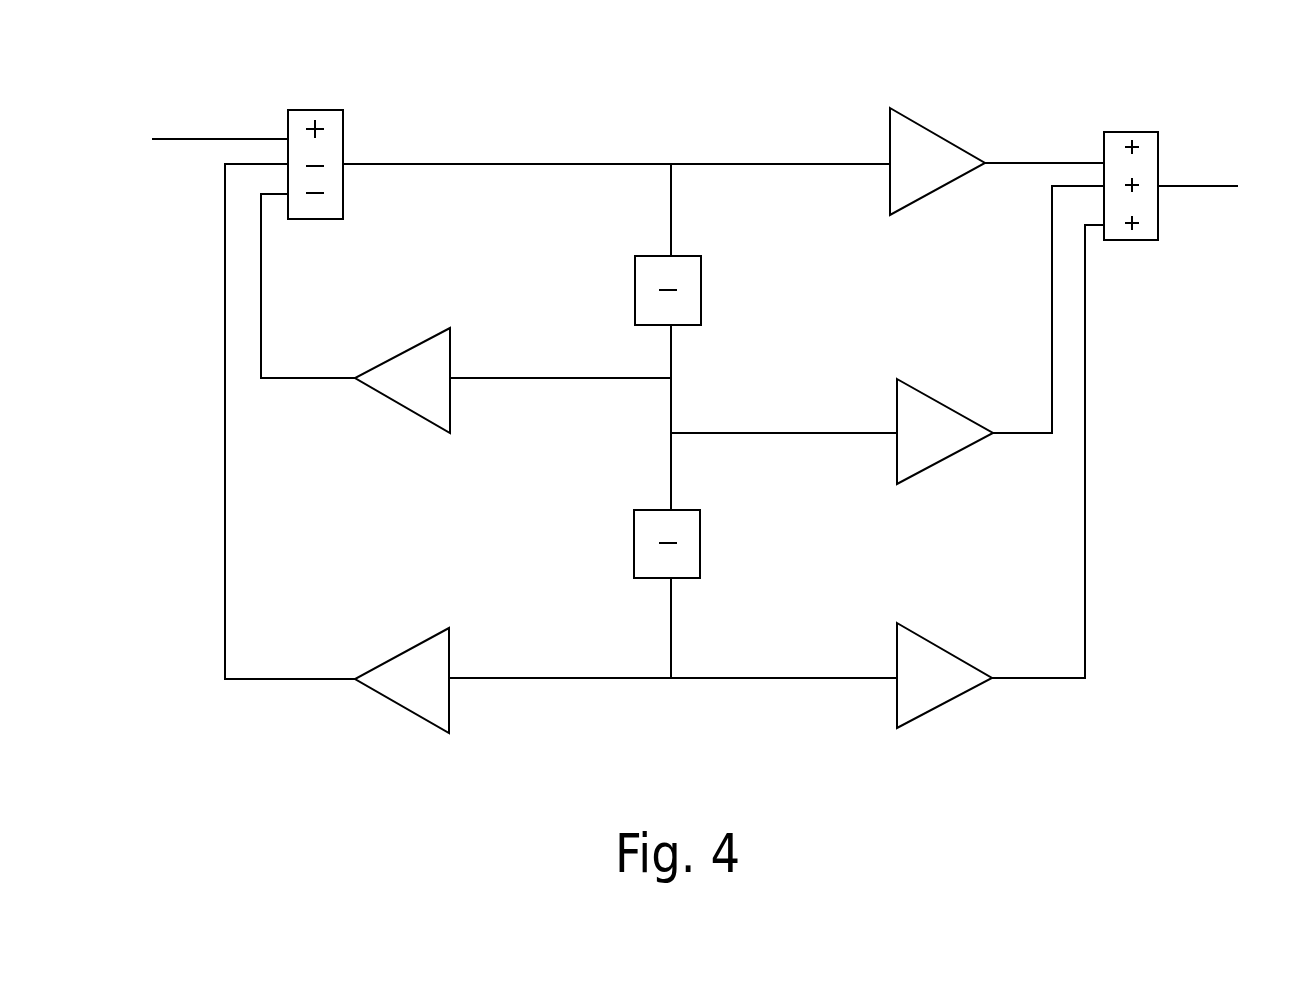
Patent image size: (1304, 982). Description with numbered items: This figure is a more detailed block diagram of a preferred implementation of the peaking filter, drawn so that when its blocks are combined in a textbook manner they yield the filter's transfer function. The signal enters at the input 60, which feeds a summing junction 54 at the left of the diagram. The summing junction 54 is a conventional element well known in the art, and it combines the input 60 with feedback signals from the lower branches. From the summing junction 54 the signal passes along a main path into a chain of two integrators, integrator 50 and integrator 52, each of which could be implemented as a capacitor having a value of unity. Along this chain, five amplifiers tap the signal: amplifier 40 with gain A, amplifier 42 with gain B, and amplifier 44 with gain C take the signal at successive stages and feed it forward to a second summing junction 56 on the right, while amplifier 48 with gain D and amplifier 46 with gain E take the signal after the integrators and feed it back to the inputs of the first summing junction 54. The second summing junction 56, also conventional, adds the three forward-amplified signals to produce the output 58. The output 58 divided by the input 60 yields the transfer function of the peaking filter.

The amplifier 40 is at (920, 120).
The amplifier 42 is at (925, 392).
The amplifier 44 is at (933, 643).
The amplifier 46 is at (423, 640).
The amplifier 48 is at (430, 337).
The integrator 50 is at (701, 283).
The integrator 52 is at (700, 535).
The summing junction 54 is at (335, 110).
The summing junction 56 is at (1158, 148).
The output 58 is at (1197, 187).
The input 60 is at (187, 138).